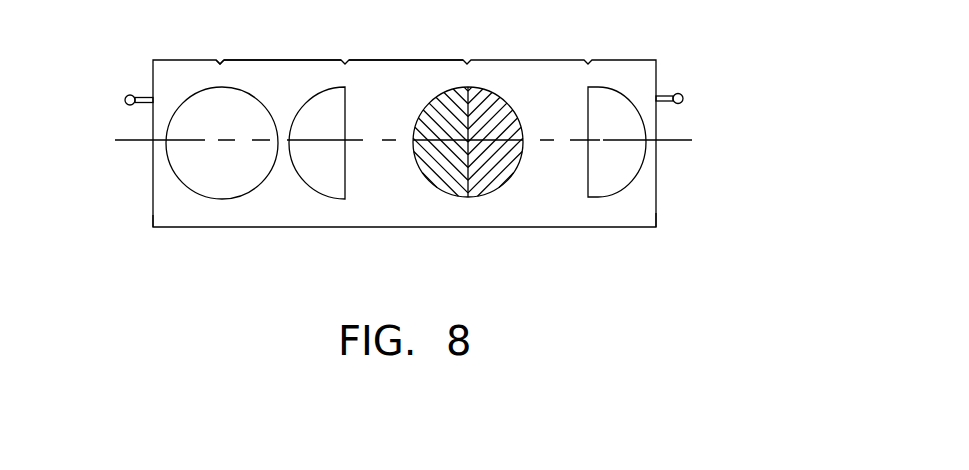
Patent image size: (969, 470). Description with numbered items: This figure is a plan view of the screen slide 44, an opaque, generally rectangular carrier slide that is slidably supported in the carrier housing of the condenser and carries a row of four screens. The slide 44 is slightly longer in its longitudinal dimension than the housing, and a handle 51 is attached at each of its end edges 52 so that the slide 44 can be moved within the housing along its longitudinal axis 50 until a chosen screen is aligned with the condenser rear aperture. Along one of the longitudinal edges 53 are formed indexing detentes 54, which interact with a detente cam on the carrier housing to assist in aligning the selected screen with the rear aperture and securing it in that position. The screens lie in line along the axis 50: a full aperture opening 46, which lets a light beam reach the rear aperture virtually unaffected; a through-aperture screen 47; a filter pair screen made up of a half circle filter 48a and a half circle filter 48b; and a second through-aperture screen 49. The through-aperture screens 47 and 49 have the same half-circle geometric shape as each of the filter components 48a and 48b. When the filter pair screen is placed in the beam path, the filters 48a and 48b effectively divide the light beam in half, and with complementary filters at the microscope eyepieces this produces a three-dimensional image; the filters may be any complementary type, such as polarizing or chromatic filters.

The screen slide 44 is at (665, 72).
The full aperture opening 46 is at (221, 199).
The through-aperture screen 47 is at (333, 198).
The half circle filter 48a is at (450, 198).
The half circle filter 48b is at (487, 198).
The through-aperture screen 49 is at (605, 197).
The longitudinal axis 50 is at (115, 140).
The handle 51 is at (125, 100).
The end edge 52 is at (153, 215).
The longitudinal edge 53 is at (405, 60).
The indexing detente 54 is at (220, 60).